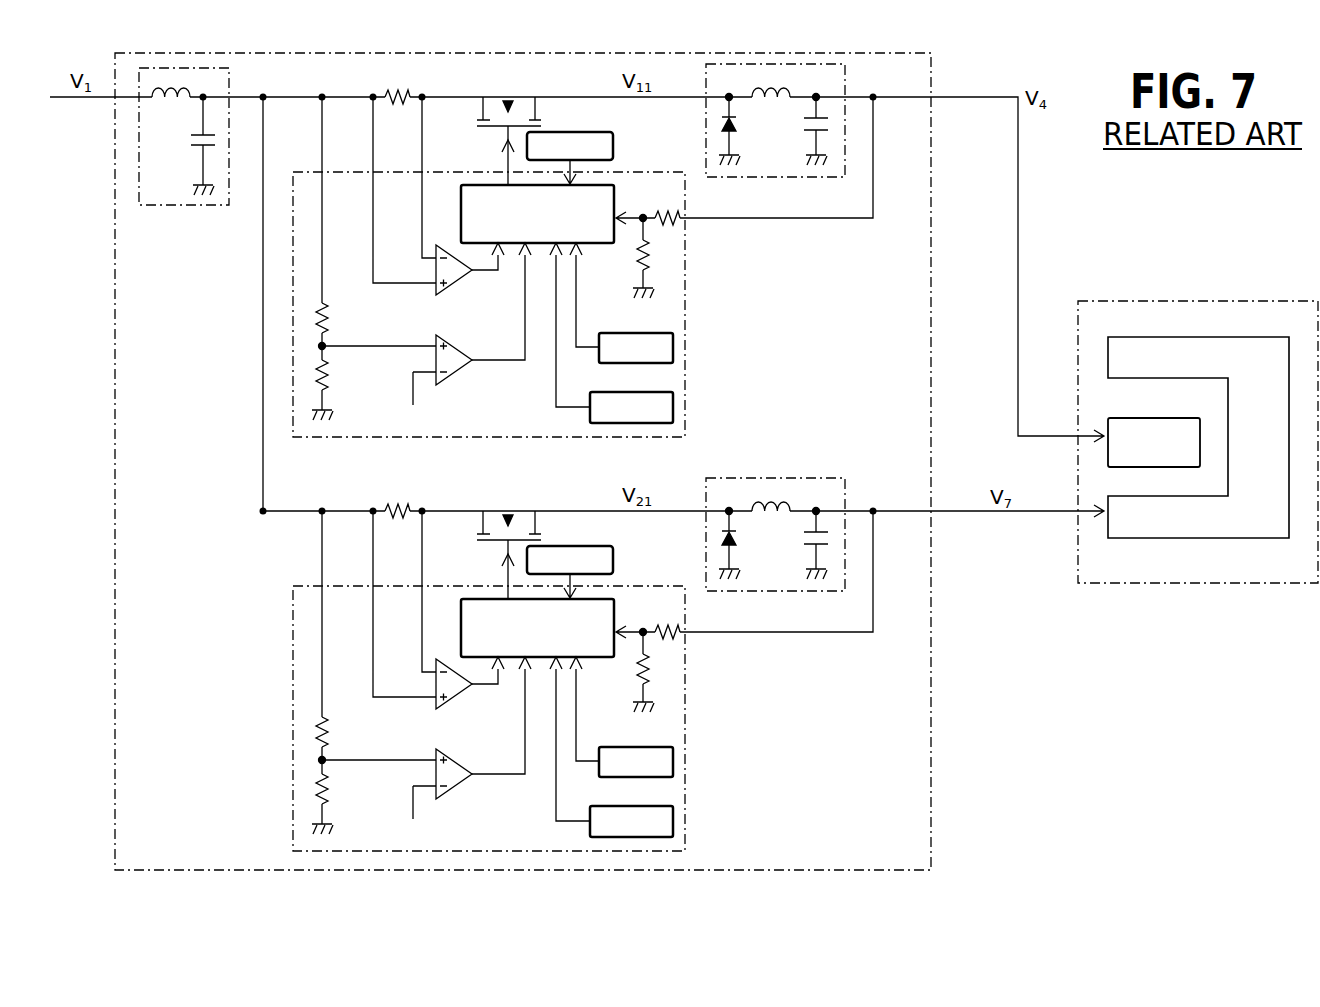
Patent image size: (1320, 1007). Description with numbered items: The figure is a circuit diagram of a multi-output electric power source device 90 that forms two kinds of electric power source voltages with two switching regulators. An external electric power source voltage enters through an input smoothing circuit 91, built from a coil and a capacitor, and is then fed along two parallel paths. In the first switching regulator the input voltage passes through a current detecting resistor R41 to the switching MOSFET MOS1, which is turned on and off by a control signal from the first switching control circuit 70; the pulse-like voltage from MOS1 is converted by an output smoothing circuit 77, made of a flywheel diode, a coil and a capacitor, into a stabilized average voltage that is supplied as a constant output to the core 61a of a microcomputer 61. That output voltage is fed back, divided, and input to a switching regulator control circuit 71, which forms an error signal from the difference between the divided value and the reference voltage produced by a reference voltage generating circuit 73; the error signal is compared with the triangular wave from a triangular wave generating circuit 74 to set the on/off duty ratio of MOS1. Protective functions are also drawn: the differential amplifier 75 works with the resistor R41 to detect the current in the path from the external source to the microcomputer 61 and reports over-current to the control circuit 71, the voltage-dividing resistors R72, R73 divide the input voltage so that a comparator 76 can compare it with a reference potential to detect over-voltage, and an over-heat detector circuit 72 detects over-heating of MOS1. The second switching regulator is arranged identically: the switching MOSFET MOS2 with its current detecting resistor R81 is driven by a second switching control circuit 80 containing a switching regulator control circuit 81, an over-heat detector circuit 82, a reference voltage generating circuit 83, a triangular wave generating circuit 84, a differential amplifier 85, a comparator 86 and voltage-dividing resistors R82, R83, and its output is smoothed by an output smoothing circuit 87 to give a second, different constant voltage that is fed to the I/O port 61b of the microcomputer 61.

The multi-output electric power source device 90 is at (931, 62).
The input smoothing circuit 91 is at (229, 82).
The first switching control circuit 70 is at (688, 372).
The switching regulator control circuit 71 is at (614, 200).
The over-heat detector circuit 72 is at (588, 133).
The reference voltage generating circuit 73 is at (606, 392).
The triangular wave generating circuit 74 is at (614, 333).
The differential amplifier 75 is at (451, 243).
The comparator 76 is at (474, 356).
The output smoothing circuit 77 is at (845, 90).
The second switching control circuit 80 is at (535, 718).
The switching regulator control circuit 81 is at (570, 652).
The over-heat detector circuit 82 is at (583, 560).
The reference voltage generating circuit 83 is at (614, 753).
The triangular wave generating circuit 84 is at (624, 723).
The differential amplifier 85 is at (435, 610).
The comparator 86 is at (423, 759).
The output smoothing circuit 87 is at (795, 528).
The microcomputer 61 is at (1137, 301).
The core 61a is at (1133, 418).
The I/O port 61b is at (1217, 337).
The current detecting resistor R41 is at (402, 82).
The voltage-dividing resistor R72 is at (345, 221).
The voltage-dividing resistor R73 is at (343, 382).
The current detecting resistor R81 is at (402, 496).
The voltage-dividing resistor R82 is at (345, 635).
The voltage-dividing resistor R83 is at (343, 796).
The switching MOSFET MOS1 is at (502, 96).
The switching MOSFET MOS2 is at (523, 538).